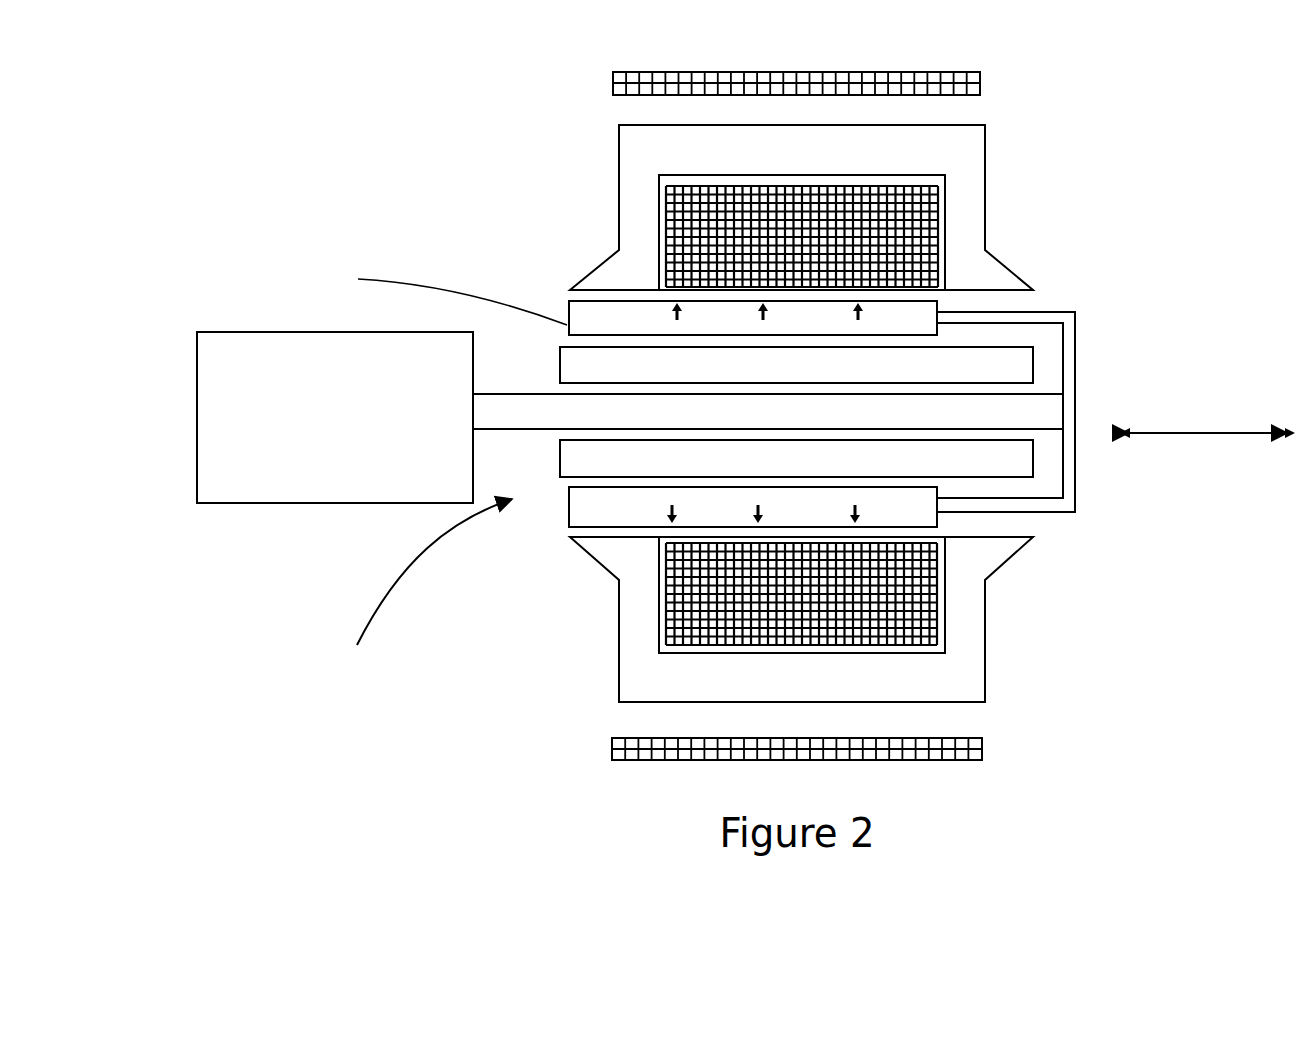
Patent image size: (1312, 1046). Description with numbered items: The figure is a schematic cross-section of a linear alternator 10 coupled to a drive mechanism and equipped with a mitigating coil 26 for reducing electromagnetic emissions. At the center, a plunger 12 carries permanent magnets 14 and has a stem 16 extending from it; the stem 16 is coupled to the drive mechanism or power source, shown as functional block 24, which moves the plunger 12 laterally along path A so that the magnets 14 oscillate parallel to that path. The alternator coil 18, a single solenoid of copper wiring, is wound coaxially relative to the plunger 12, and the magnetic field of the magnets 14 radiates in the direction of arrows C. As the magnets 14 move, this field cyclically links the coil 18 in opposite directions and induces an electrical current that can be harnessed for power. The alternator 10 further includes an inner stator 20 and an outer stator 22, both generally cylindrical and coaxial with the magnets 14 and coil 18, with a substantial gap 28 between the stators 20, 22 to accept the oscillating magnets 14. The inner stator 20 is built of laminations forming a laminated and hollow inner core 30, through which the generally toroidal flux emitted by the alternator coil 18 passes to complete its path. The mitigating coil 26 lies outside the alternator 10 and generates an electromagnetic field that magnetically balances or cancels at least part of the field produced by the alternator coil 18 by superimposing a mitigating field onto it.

The linear alternator 10 is at (1164, 297).
The plunger 12 is at (1104, 365).
The permanent magnet 14 is at (546, 372).
The stem 16 is at (1050, 416).
The alternator coil 18 is at (927, 205).
The inner stator 20 is at (1015, 358).
The outer stator 22 is at (637, 165).
The drive mechanism 24 is at (335, 417).
The mitigating coil 26 is at (972, 82).
The gap 28 is at (423, 592).
The hollow inner core 30 is at (446, 296).
The arrows C is at (675, 318).
The path A is at (1207, 449).